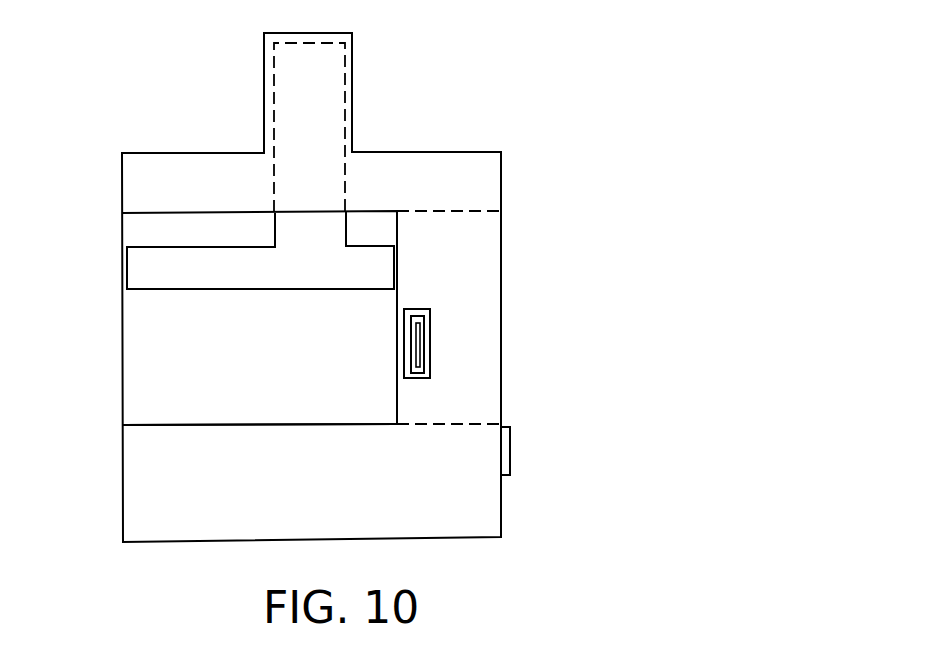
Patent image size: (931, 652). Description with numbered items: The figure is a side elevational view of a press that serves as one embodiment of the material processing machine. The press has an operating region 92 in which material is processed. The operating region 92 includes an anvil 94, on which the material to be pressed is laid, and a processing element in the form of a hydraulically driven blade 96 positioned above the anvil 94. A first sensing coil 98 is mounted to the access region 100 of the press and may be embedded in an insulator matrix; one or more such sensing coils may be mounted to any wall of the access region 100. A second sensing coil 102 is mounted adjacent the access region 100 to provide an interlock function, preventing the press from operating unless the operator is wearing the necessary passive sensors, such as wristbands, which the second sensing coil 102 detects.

The operating region 92 is at (268, 342).
The anvil 94 is at (212, 425).
The hydraulically driven blade 96 is at (223, 270).
The first sensing coil 98 is at (430, 336).
The access region 100 is at (473, 385).
The second sensing coil 102 is at (510, 453).